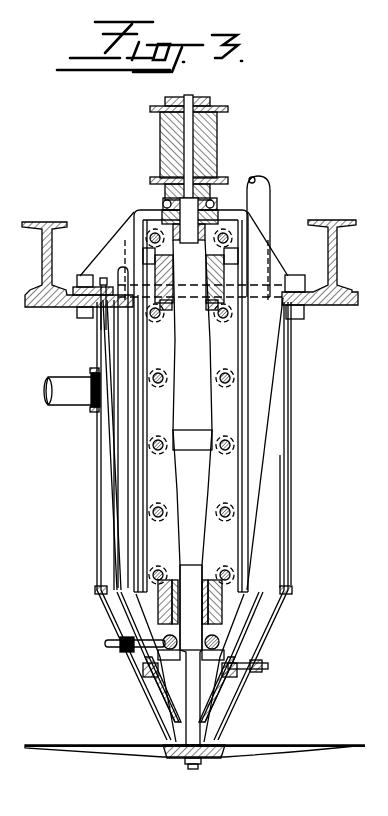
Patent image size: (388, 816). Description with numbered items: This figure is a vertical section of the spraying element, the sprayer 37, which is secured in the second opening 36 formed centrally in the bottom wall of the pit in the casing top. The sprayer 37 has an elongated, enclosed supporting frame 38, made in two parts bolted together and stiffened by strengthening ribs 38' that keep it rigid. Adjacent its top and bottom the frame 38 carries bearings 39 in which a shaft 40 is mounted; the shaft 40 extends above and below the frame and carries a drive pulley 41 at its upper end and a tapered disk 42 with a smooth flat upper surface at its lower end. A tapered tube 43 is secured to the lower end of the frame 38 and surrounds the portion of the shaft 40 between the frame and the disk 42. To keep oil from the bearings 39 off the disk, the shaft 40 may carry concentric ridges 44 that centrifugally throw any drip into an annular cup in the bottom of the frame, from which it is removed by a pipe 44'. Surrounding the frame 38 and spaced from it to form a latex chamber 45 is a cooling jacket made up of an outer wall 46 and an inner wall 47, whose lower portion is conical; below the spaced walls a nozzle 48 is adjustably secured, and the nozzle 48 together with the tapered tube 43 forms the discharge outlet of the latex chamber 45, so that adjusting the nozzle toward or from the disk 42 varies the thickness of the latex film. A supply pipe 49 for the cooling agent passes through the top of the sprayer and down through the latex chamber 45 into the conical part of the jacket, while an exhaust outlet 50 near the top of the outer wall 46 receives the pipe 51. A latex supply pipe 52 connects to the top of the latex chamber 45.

The second opening 36 is at (302, 248).
The sprayer 37 is at (294, 446).
The supporting frame 38 is at (216, 395).
The strengthening ribs 38' is at (200, 274).
The bearings 39 is at (185, 270).
The shaft 40 is at (196, 351).
The drive pulley 41 is at (218, 136).
The tapered disk 42 is at (301, 745).
The tapered tube 43 is at (168, 690).
The concentric ridges 44 is at (190, 662).
The pipe 44' is at (115, 656).
The latex chamber 45 is at (260, 553).
The outer wall 46 is at (289, 507).
The inner wall 47 is at (272, 531).
The nozzle 48 is at (218, 737).
The supply pipe 49 is at (117, 272).
The exhaust outlet 50 is at (95, 425).
The pipe 51 is at (56, 392).
The latex supply pipe 52 is at (268, 196).